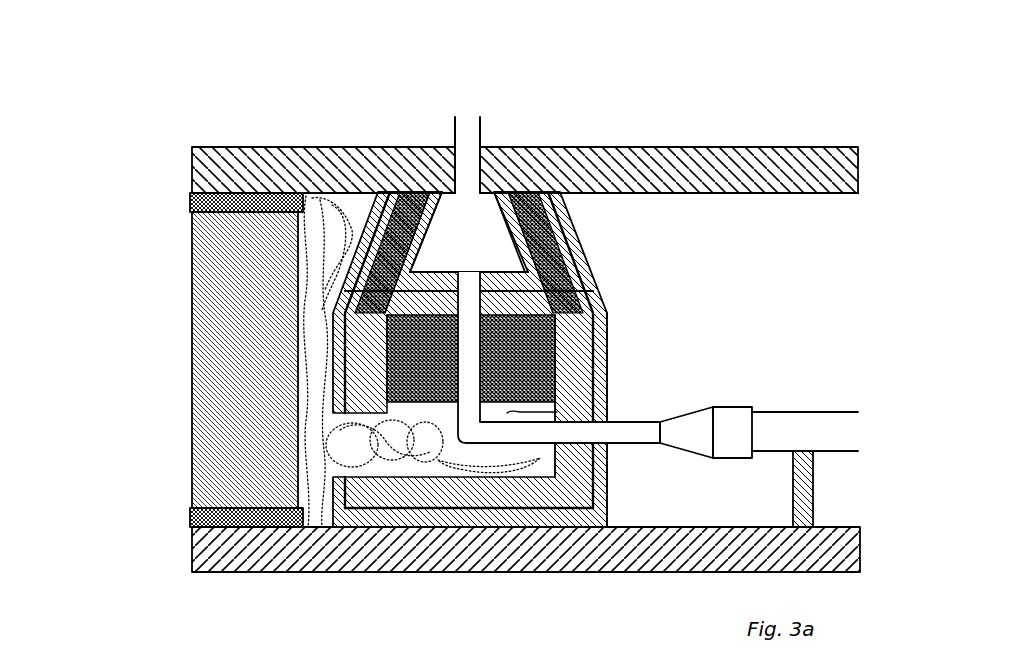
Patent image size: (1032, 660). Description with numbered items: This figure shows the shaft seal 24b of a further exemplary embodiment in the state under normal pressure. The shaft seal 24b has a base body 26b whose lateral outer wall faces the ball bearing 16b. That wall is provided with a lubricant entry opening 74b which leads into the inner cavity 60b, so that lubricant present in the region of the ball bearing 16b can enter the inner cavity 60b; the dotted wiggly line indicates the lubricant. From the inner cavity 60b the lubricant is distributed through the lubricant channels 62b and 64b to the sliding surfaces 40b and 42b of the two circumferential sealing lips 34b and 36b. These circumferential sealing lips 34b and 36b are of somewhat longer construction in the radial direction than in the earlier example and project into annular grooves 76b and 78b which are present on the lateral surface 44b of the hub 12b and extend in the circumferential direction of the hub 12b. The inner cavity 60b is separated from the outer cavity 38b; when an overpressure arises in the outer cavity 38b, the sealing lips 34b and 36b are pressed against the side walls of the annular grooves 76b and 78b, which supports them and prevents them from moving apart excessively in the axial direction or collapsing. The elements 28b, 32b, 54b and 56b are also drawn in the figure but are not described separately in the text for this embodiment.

The hub 12b is at (243, 176).
The ball bearing 16b is at (184, 374).
The shaft seal 24b is at (636, 277).
The base body 26b is at (607, 337).
The bottom wall 28b is at (465, 532).
The inner wall surface 32b is at (443, 190).
The circumferential sealing lip 34b is at (577, 230).
The circumferential sealing lip 36b is at (345, 190).
The outer cavity 38b is at (490, 250).
The sliding surface 40b is at (477, 267).
The sliding surface 42b is at (428, 190).
The lateral surface 44b is at (817, 200).
The connection 54b is at (616, 450).
The supply channel 56b is at (433, 264).
The inner cavity 60b is at (607, 393).
The lubricant channel 62b is at (587, 262).
The lubricant channel 64b is at (298, 193).
The lubricant entry opening 74b is at (323, 530).
The annular groove 76b is at (548, 190).
The annular groove 78b is at (393, 190).